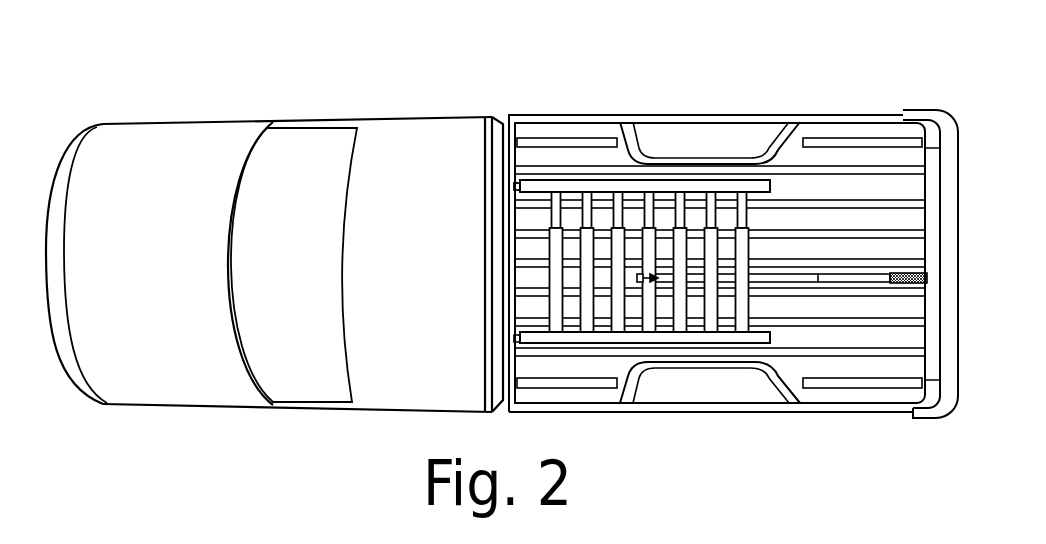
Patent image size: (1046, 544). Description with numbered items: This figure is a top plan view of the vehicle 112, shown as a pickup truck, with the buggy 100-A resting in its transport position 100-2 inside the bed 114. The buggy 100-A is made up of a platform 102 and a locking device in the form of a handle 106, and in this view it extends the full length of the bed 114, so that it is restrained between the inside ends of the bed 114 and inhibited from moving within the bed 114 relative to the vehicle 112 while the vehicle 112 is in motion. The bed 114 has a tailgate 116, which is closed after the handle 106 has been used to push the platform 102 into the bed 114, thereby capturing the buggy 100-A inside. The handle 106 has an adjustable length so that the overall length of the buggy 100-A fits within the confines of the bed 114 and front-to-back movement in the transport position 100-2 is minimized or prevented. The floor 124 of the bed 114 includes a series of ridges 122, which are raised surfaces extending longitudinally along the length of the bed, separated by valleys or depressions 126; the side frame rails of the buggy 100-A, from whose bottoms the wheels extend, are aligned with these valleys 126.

The transport position 100-2 is at (551, 181).
The buggy 100-A is at (716, 145).
The platform 102 is at (512, 338).
The handle 106 is at (790, 273).
The vehicle 112 is at (211, 122).
The bed 114 is at (773, 120).
The tailgate 116 is at (912, 150).
The ridges 122 is at (820, 388).
The floor 124 is at (610, 406).
The valleys 126 is at (856, 365).